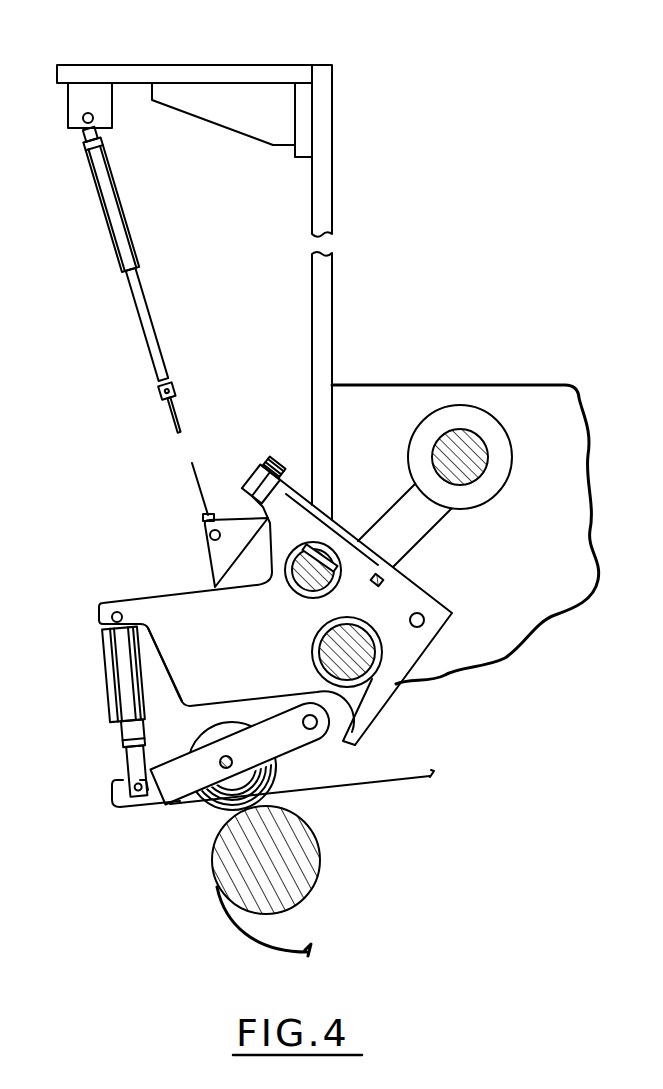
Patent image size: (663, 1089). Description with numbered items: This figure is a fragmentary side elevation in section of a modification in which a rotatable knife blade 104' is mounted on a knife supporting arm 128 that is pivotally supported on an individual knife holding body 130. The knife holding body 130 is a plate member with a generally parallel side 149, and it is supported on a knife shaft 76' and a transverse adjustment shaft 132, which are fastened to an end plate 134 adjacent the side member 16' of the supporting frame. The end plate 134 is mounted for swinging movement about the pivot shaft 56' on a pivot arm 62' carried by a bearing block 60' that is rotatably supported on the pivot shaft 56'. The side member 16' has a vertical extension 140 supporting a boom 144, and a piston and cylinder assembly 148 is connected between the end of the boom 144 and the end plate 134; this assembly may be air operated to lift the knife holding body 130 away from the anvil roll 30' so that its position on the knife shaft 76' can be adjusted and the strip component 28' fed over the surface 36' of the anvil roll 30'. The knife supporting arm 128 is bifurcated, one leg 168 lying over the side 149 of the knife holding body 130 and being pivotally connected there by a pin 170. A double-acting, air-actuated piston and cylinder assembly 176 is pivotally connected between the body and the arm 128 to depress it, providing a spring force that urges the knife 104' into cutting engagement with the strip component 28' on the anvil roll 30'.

The boom 144 is at (252, 72).
The vertical extension 140 is at (324, 157).
The piston and cylinder assembly 148 is at (124, 226).
The side member 16' is at (465, 513).
The bearing block 60' is at (477, 451).
The pivot shaft 56' is at (498, 457).
The pivot arm 62' is at (421, 525).
The end plate 134 is at (440, 616).
The knife holding body 130 is at (157, 605).
The transverse adjustment shaft 132 is at (300, 578).
The piston and cylinder assembly 176 is at (120, 678).
The side 149 is at (190, 690).
The knife shaft 76' is at (384, 673).
The pin 170 is at (356, 740).
The leg 168 is at (280, 752).
The knife supporting arm 128 is at (178, 790).
The rotatable knife blade 104' is at (210, 807).
The surface 36' is at (301, 860).
The anvil roll 30' is at (297, 921).
The strip component 28' is at (308, 801).